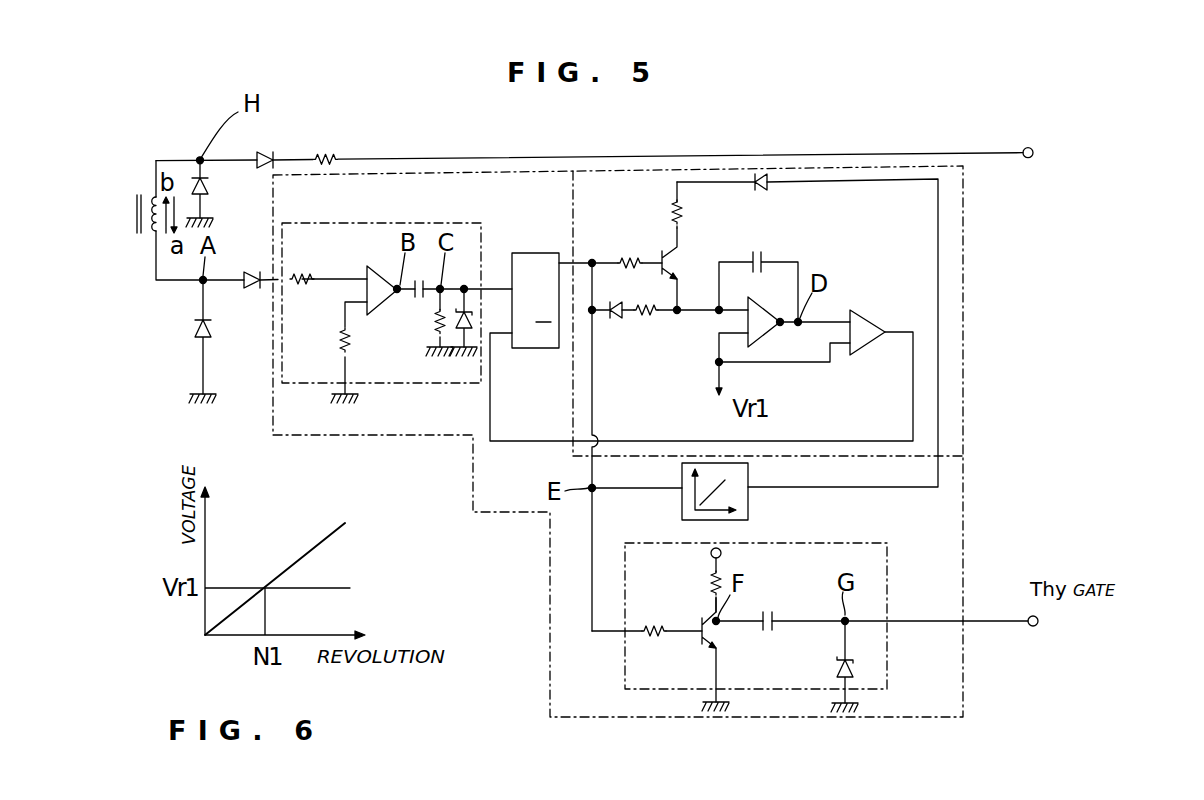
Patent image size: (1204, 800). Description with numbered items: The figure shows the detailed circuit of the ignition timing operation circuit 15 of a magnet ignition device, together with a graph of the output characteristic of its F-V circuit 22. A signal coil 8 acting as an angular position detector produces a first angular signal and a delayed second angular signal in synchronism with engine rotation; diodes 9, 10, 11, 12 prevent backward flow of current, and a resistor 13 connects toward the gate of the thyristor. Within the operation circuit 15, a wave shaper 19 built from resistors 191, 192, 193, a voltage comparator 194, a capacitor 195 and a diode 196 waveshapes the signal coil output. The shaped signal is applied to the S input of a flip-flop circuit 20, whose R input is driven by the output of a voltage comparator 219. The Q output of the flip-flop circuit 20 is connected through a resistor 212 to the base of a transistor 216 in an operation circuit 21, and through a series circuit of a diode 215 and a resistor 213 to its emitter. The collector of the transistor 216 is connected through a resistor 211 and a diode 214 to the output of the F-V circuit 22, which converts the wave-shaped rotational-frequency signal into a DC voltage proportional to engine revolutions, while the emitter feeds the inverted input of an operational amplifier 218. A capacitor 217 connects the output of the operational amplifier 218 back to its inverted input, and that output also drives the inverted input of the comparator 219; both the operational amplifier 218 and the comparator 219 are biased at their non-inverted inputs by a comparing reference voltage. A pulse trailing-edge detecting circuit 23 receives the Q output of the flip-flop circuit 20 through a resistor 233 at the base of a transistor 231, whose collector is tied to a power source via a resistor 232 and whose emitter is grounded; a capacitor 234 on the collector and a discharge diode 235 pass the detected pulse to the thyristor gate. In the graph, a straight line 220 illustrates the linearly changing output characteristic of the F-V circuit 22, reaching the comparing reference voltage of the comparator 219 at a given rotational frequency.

In FIG. 5, the signal coil 8 is at (140, 237).
In FIG. 5, the diode 9 is at (266, 152).
In FIG. 5, the diode 10 is at (210, 187).
In FIG. 5, the diode 11 is at (252, 290).
In FIG. 5, the diode 12 is at (194, 325).
In FIG. 5, the resistor 13 is at (321, 153).
In FIG. 5, the ignition timing operation circuit 15 is at (525, 533).
In FIG. 5, the wave shaper 19 is at (338, 223).
In FIG. 5, the resistor 191 is at (305, 275).
In FIG. 5, the resistor 192 is at (350, 340).
In FIG. 5, the resistor 193 is at (438, 330).
In FIG. 5, the voltage comparator 194 is at (384, 286).
In FIG. 5, the capacitor 195 is at (416, 300).
In FIG. 5, the diode 196 is at (466, 316).
In FIG. 5, the flip-flop circuit 20 is at (533, 349).
In FIG. 5, the operation circuit 21 is at (955, 235).
In FIG. 5, the resistor 211 is at (683, 214).
In FIG. 5, the resistor 212 is at (626, 259).
In FIG. 5, the resistor 213 is at (656, 318).
In FIG. 5, the diode 214 is at (768, 187).
In FIG. 5, the diode 215 is at (620, 318).
In FIG. 5, the transistor 216 is at (672, 262).
In FIG. 5, the capacitor 217 is at (770, 252).
In FIG. 5, the operational amplifier 218 is at (768, 338).
In FIG. 5, the voltage comparator 219 is at (868, 318).
In FIG. 5, the F-V circuit 22 is at (748, 505).
In FIG. 5, the straight line 220 is at (803, 487).
In FIG. 6, the straight line 220 is at (292, 565).
In FIG. 5, the pulse trailing-edge detecting circuit 23 is at (868, 543).
In FIG. 5, the transistor 231 is at (720, 640).
In FIG. 5, the resistor 232 is at (713, 582).
In FIG. 5, the resistor 233 is at (656, 626).
In FIG. 5, the capacitor 234 is at (770, 608).
In FIG. 5, the diode 235 is at (855, 668).